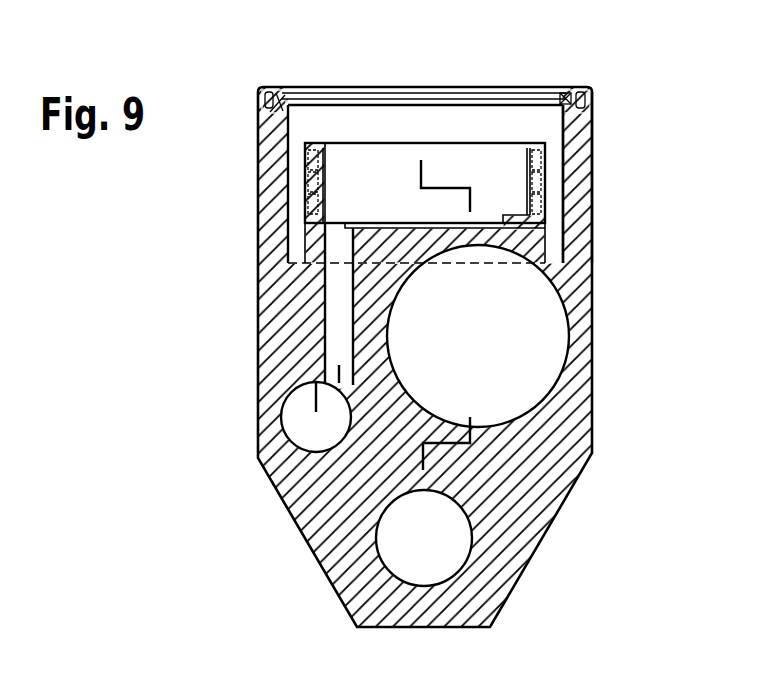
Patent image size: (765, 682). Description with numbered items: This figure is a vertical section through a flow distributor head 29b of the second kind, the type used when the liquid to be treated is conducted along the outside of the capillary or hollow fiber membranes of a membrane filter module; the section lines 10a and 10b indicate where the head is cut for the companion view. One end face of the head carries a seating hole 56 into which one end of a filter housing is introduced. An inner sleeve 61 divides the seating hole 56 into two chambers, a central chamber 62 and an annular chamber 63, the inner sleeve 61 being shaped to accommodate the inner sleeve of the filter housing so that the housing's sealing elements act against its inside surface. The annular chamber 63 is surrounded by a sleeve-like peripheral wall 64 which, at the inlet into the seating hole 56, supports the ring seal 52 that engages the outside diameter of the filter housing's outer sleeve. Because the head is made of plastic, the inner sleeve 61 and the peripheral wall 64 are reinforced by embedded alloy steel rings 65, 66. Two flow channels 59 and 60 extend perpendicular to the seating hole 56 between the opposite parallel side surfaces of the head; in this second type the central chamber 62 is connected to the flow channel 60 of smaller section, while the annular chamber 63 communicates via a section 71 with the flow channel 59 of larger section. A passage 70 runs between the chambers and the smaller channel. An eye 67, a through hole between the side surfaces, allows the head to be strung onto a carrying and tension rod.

The flow distributor head 29b is at (604, 58).
The ring seal 52 is at (313, 103).
The seating hole 56 is at (463, 118).
The central chamber 62 is at (502, 165).
The alloy steel ring 66 is at (590, 100).
The peripheral wall 64 is at (573, 155).
The alloy steel ring 65 is at (532, 178).
The inner sleeve 61 is at (545, 196).
The annular chamber 63 is at (290, 226).
The channel 70 is at (338, 317).
The section 71 is at (457, 257).
The flow channel 59 is at (540, 353).
The flow channel 60 is at (300, 433).
The eye 67 is at (448, 553).
The section line 10a is at (340, 58).
The section line 10b is at (423, 58).